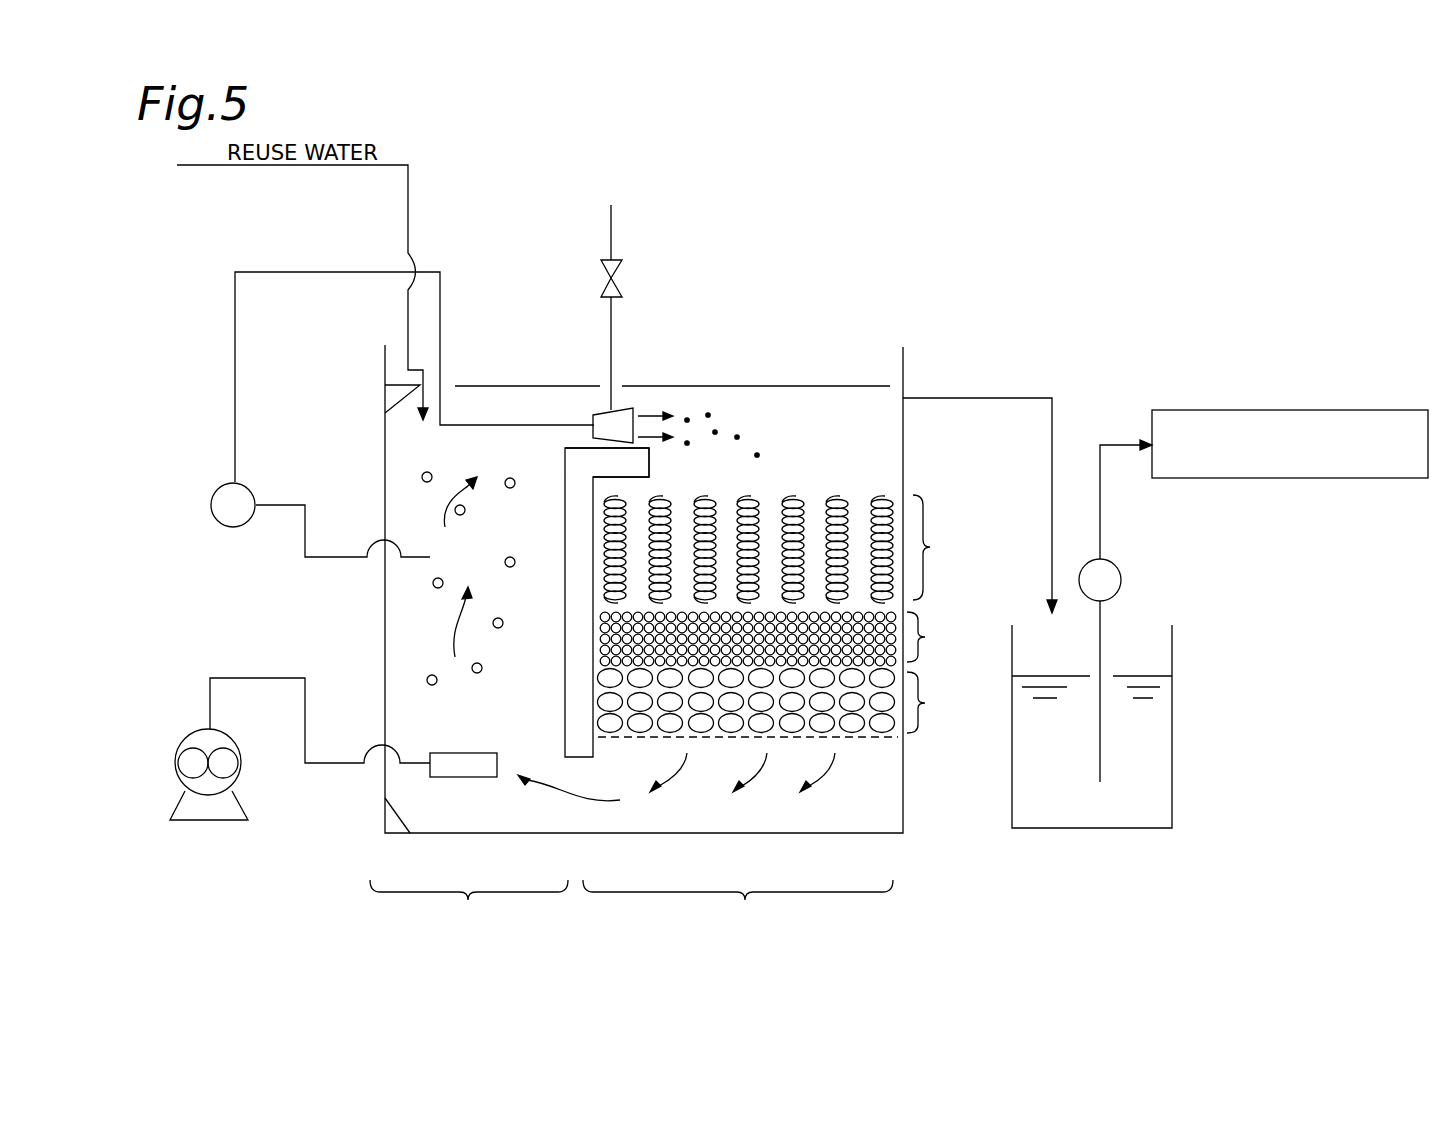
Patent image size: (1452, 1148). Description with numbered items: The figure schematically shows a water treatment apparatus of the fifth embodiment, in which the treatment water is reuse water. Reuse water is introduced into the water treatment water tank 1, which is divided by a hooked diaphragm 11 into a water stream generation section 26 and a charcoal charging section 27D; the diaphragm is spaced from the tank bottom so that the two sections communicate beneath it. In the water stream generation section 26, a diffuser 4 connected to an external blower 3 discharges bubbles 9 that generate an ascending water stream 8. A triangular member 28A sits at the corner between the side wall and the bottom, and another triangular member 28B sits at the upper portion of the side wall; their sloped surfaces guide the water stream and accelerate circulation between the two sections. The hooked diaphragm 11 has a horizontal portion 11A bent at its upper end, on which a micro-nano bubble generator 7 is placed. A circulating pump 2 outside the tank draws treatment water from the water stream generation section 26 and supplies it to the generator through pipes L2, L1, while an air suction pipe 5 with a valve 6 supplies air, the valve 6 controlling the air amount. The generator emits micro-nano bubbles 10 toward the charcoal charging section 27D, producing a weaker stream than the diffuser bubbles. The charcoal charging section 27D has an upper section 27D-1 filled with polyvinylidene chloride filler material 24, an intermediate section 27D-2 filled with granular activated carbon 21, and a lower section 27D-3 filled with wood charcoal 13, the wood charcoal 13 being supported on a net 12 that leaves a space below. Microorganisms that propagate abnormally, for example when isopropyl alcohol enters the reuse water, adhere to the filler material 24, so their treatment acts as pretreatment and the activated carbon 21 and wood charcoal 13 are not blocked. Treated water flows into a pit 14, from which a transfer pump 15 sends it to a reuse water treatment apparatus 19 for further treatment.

The water treatment water tank 1 is at (370, 708).
The circulating pump 2 is at (233, 528).
The blower 3 is at (193, 728).
The diffuser 4 is at (469, 777).
The air suction pipe 5 is at (613, 224).
The valve 6 is at (622, 287).
The micro-nano bubble generator 7 is at (622, 412).
The water stream 8 is at (444, 527).
The bubbles 9 is at (515, 557).
The micro-nano bubbles 10 is at (742, 415).
The hooked diaphragm 11 is at (565, 480).
The horizontal portion 11A is at (628, 476).
The net 12 is at (860, 740).
The wood charcoal 13 is at (643, 733).
The pit 14 is at (1187, 705).
The transfer pump 15 is at (1121, 580).
The reuse water treatment apparatus 19 is at (1195, 410).
The granular activated carbon 21 is at (903, 612).
The polyvinylidene chloride filler material 24 is at (838, 500).
The water stream generation section 26 is at (469, 907).
The charcoal charging section 27D is at (738, 908).
The upper section 27D-1 is at (957, 547).
The intermediate section 27D-2 is at (799, 639).
The lower section 27D-3 is at (953, 702).
The triangular member 28A is at (385, 818).
The triangular member 28B is at (385, 393).
The pipe L1 is at (276, 270).
The pipe L2 is at (280, 507).